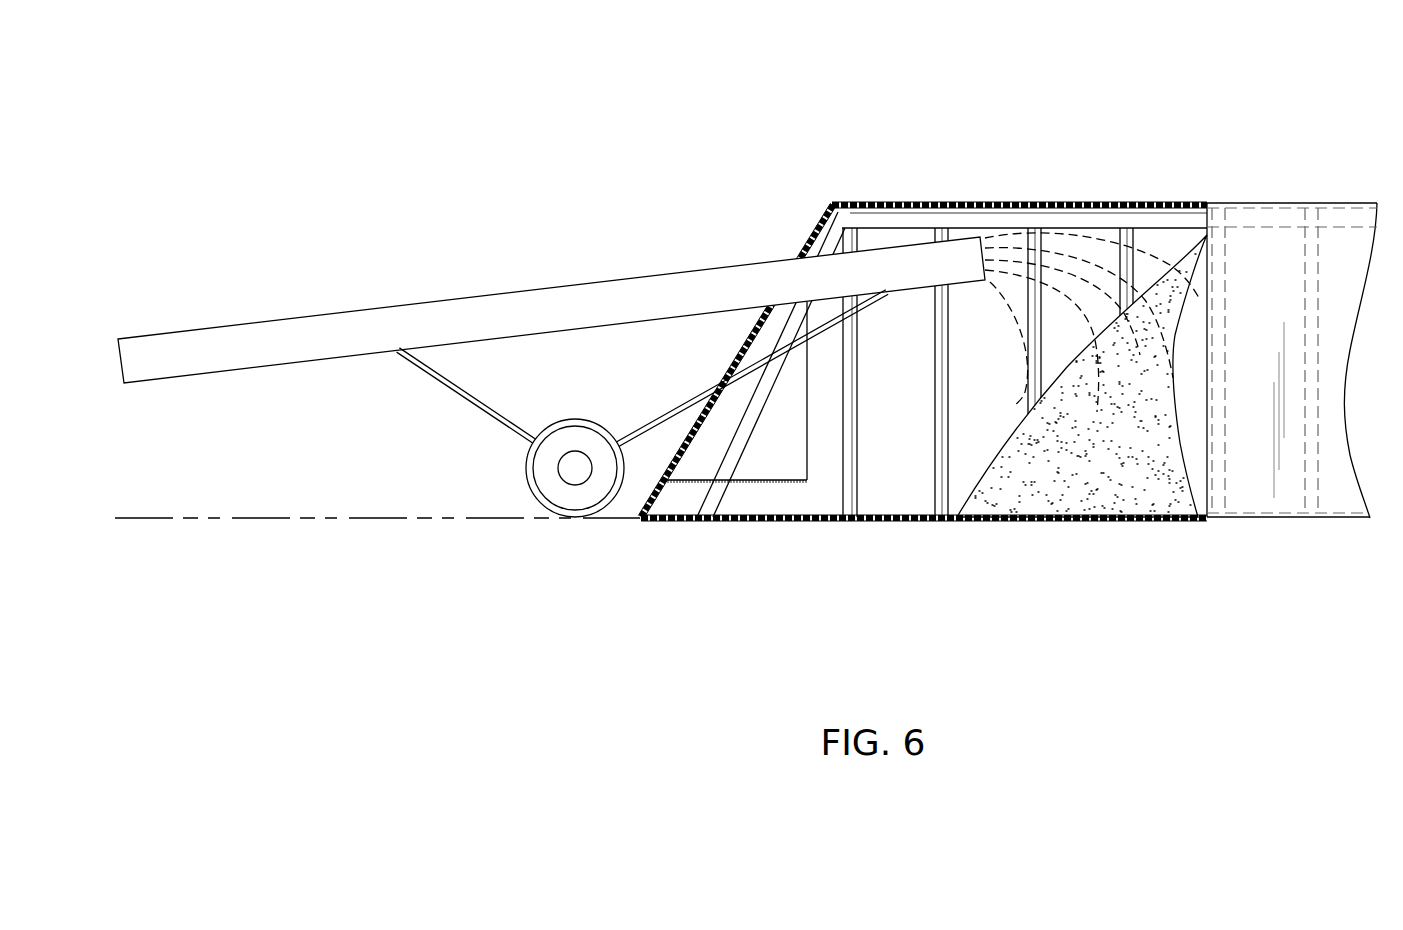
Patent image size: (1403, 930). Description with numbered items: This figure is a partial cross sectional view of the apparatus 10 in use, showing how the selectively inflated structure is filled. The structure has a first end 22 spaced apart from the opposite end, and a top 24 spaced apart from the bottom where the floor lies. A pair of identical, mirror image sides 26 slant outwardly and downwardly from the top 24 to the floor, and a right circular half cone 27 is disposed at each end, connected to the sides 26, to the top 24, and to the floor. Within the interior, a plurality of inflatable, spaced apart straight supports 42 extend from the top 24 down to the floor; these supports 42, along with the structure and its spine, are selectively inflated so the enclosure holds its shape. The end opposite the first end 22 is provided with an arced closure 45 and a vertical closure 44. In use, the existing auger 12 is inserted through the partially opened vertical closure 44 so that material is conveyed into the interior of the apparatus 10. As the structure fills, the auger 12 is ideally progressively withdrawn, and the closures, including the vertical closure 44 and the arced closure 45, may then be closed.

The apparatus 10 is at (1092, 132).
The existing auger 12 is at (705, 267).
The first end 22 is at (714, 342).
The top 24 is at (872, 204).
The sides 26 is at (1348, 250).
The right circular half cone 27 is at (810, 497).
The straight supports 42 is at (829, 208).
The vertical closure 44 is at (800, 256).
The arced closure 45 is at (749, 481).